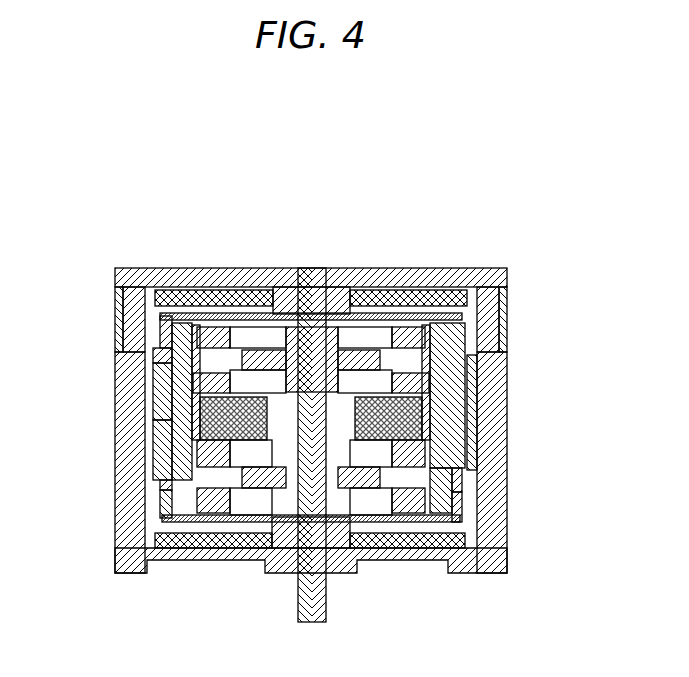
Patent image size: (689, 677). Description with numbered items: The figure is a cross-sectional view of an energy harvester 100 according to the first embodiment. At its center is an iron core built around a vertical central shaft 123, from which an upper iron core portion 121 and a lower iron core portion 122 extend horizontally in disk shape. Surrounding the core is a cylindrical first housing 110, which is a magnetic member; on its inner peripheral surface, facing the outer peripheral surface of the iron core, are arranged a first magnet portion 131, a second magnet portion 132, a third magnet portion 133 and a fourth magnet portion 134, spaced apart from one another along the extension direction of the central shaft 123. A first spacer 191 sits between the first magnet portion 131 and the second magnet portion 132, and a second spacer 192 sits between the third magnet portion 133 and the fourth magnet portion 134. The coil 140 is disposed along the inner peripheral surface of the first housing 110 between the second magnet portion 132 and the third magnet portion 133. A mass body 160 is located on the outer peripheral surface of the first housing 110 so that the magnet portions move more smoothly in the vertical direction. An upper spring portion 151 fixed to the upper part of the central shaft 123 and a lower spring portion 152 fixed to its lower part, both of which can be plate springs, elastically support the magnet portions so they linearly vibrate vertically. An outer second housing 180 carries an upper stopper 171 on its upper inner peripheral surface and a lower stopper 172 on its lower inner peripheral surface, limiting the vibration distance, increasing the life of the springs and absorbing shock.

The energy harvester 100 is at (368, 141).
The first housing 110 is at (175, 550).
The upper iron core portion 121 is at (473, 360).
The lower iron core portion 122 is at (462, 497).
The central shaft 123 is at (462, 472).
The first magnet portion 131 is at (152, 352).
The second magnet portion 132 is at (170, 400).
The third magnet portion 133 is at (170, 455).
The fourth magnet portion 134 is at (170, 510).
The coil 140 is at (422, 420).
The upper spring portion 151 is at (227, 270).
The lower spring portion 152 is at (236, 548).
The mass body 160 is at (465, 407).
The upper stopper 171 is at (433, 300).
The lower stopper 172 is at (413, 548).
The second housing 180 is at (160, 268).
The first spacer 191 is at (153, 377).
The second spacer 192 is at (170, 484).